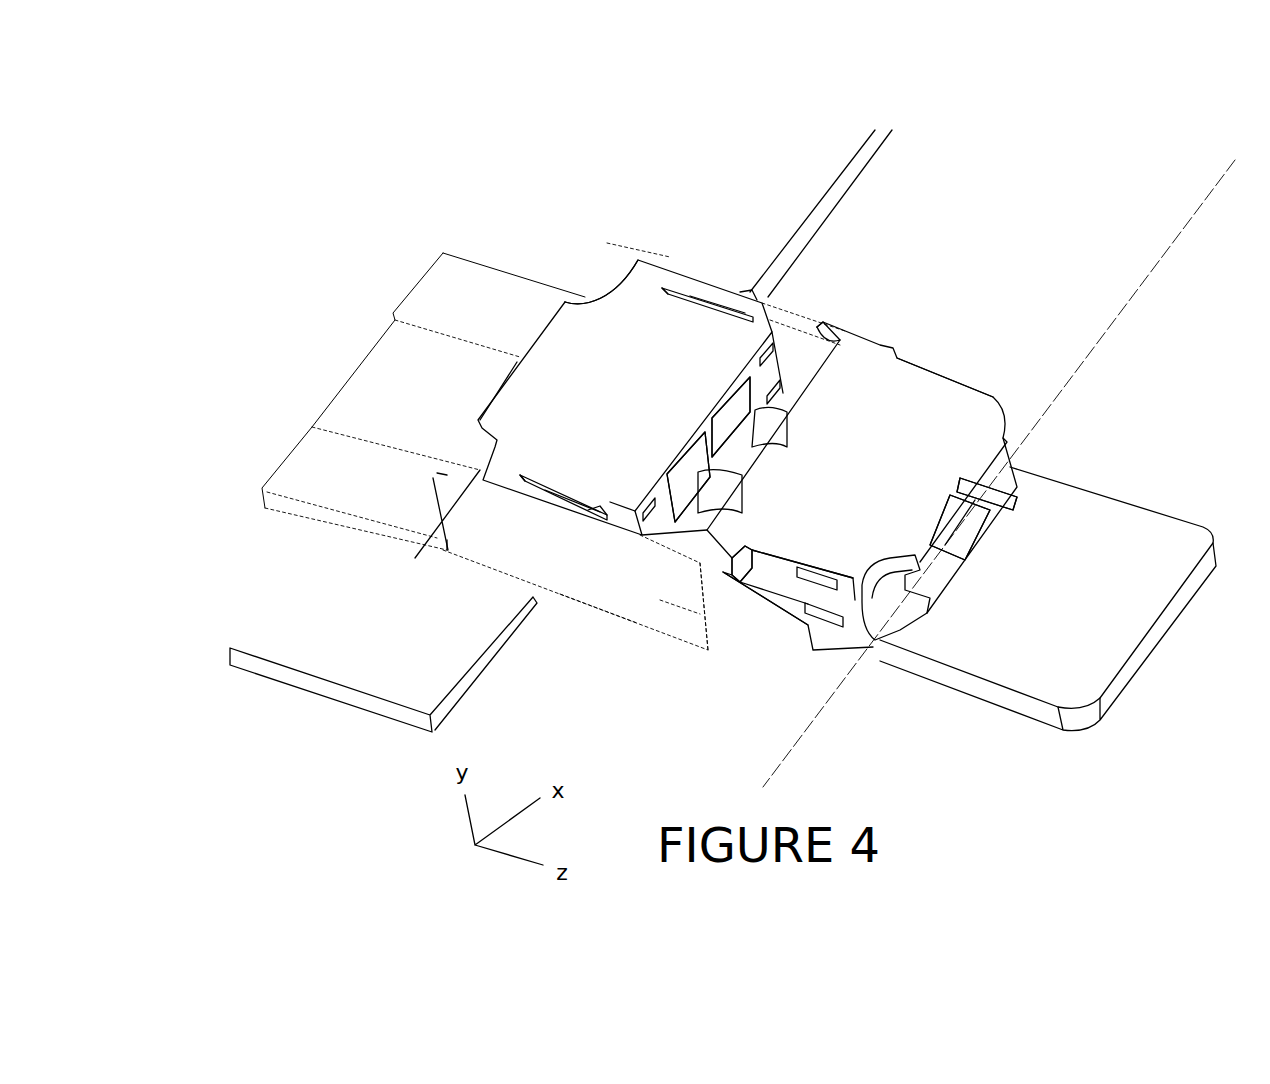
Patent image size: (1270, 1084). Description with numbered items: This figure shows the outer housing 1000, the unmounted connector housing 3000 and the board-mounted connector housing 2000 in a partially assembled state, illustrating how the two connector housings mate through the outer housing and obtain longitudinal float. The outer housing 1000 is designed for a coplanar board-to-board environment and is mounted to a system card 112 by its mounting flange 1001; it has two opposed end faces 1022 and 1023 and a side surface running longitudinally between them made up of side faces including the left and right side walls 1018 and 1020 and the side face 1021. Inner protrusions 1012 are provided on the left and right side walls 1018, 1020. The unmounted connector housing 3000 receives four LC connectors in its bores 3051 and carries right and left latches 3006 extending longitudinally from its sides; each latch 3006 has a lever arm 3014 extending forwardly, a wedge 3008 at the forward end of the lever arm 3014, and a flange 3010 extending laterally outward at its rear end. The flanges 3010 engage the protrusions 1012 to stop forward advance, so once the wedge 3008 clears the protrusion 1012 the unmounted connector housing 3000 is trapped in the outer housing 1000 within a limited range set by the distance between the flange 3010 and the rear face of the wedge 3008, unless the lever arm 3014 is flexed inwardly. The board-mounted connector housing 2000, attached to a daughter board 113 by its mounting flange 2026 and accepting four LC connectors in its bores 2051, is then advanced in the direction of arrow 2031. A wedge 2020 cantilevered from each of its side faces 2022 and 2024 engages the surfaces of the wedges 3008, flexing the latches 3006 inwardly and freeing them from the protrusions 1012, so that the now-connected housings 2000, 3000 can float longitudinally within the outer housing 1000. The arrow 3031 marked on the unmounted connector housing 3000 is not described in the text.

The system card 112 is at (308, 683).
The daughter board 113 is at (1168, 315).
The outer housing 1000 is at (578, 598).
The mounting flange 1001 is at (305, 517).
The inner protrusions 1012 is at (727, 287).
The side face 1018 is at (855, 317).
The side face 1020 is at (673, 620).
The side face 1021 is at (633, 630).
The end face 1022 is at (437, 508).
The end face 1023 is at (715, 628).
The board-mounted connector housing 2000 is at (955, 422).
The wedge 2020 is at (843, 338).
The side face 2022 is at (772, 585).
The side face 2024 is at (957, 378).
The mounting flange 2026 is at (990, 693).
The arrow 2031 is at (790, 460).
The bores 2051 is at (928, 585).
The unmounted connector housing 3000 is at (598, 337).
The latches 3006 is at (680, 283).
The wedge 3008 is at (747, 295).
The flange 3010 is at (638, 260).
The lever arm 3014 is at (693, 290).
The mating direction 3031 is at (657, 423).
The bores 3051 is at (730, 423).